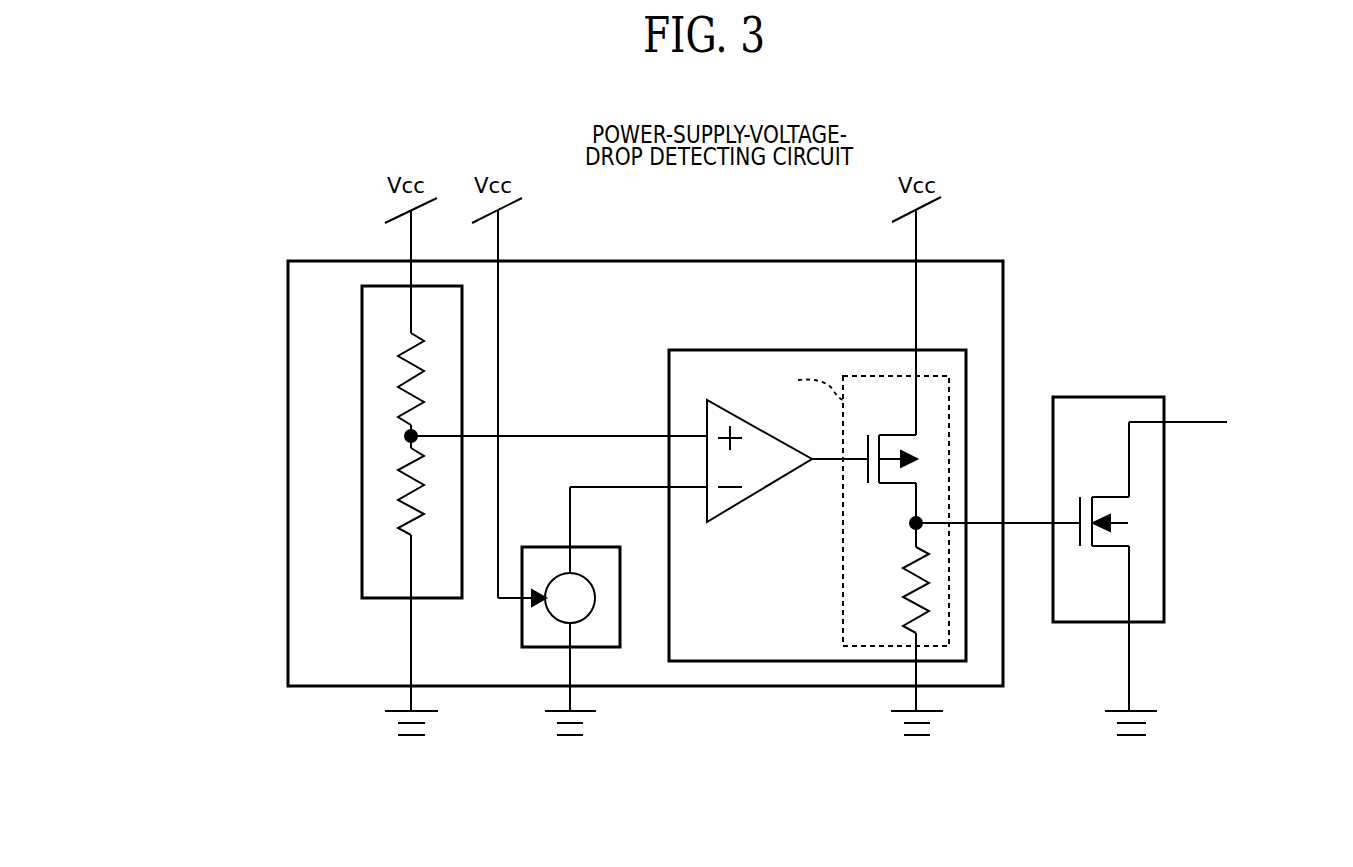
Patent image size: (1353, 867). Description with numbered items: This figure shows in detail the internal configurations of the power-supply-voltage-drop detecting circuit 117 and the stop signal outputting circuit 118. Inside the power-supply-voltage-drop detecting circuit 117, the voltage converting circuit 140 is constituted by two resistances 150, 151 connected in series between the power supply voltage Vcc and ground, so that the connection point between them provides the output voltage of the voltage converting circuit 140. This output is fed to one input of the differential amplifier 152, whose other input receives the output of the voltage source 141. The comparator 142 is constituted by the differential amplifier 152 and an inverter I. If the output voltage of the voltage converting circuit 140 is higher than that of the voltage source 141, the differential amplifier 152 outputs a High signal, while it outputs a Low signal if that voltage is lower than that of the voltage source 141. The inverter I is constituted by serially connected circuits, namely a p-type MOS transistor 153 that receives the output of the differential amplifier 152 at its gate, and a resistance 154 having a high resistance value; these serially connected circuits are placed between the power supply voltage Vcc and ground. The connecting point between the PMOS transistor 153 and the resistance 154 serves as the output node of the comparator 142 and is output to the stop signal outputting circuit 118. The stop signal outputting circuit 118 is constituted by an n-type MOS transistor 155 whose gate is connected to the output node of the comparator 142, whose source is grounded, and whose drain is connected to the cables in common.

The power-supply-voltage-drop detecting circuit 117 is at (772, 259).
The stop signal outputting circuit 118 is at (1125, 576).
The voltage converting circuit 140 is at (436, 573).
The voltage source 141 is at (605, 647).
The comparator 142 is at (828, 661).
The resistance 150 is at (398, 371).
The resistance 151 is at (398, 485).
The differential amplifier 152 is at (750, 500).
The p-type MOS transistor 153 is at (885, 436).
The resistance 154 is at (912, 590).
The n-type MOS transistor 155 is at (1135, 522).